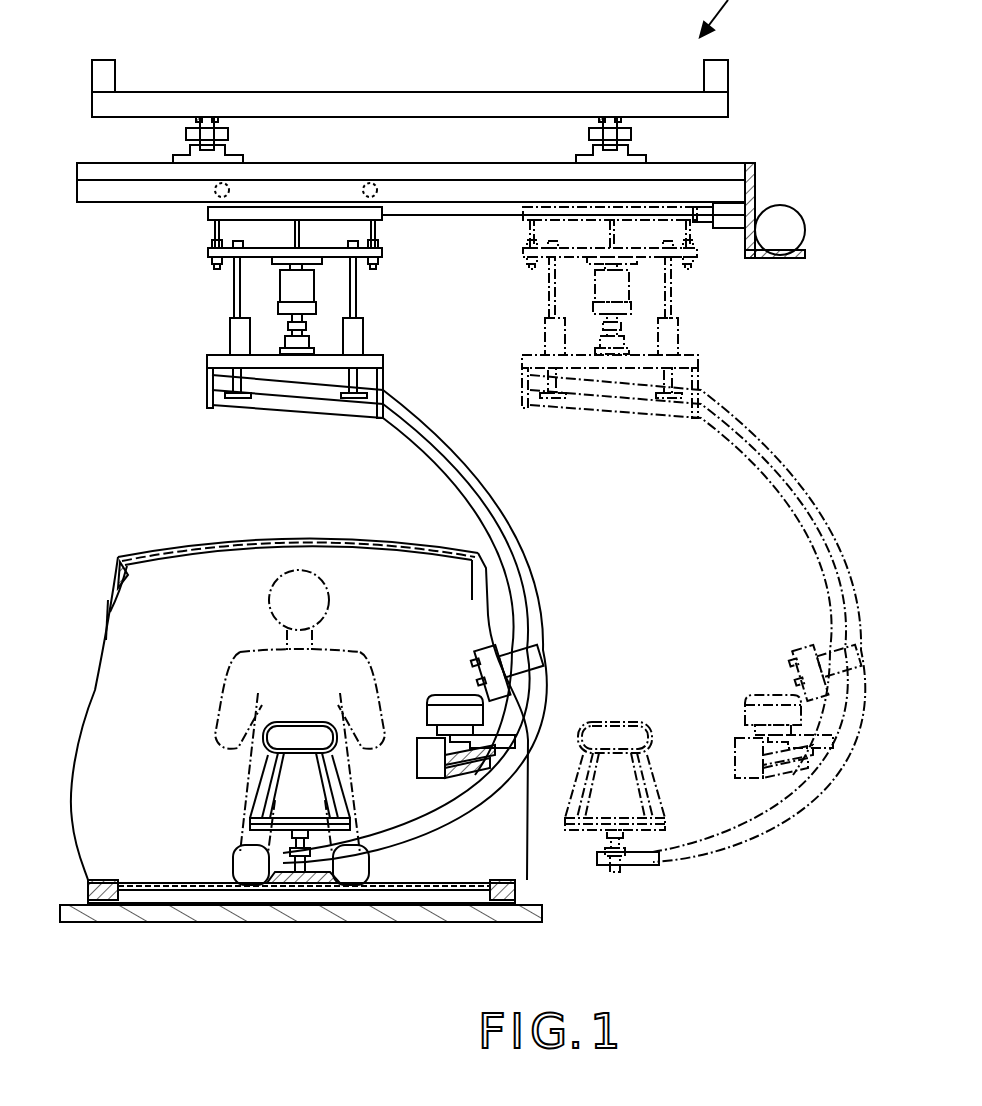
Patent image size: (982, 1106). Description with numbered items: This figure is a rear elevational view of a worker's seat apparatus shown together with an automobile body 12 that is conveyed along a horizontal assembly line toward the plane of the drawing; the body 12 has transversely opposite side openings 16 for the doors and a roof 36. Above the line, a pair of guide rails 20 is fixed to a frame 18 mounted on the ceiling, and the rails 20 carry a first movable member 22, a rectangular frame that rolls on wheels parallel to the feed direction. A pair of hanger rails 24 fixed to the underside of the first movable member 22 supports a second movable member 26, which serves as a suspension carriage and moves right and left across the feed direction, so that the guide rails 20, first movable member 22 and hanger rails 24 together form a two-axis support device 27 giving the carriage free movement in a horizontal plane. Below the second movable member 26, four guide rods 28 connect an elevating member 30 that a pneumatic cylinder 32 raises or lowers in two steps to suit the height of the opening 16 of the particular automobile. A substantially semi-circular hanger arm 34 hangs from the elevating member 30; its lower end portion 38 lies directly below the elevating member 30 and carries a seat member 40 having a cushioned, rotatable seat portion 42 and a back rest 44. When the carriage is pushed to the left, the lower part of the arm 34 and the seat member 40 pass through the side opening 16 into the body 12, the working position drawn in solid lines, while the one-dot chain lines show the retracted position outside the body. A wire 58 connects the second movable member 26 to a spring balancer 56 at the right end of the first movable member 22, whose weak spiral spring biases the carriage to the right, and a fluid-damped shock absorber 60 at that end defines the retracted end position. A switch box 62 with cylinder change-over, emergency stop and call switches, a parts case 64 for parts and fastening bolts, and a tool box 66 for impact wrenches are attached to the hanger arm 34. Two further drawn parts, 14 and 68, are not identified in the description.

The automobile body 12 is at (113, 540).
The base plate 14 is at (385, 915).
The side openings 16 is at (110, 612).
The frame 18 is at (380, 100).
The guide rails 20 is at (210, 120).
The first movable member 22 is at (468, 172).
The hanger rails 24 is at (108, 190).
The second movable member 26 is at (318, 216).
The two-axis support device 27 is at (176, 226).
The guide rods 28 is at (234, 300).
The elevating member 30 is at (370, 362).
The pneumatic cylinder 32 is at (298, 280).
The hanger arm 34 is at (532, 585).
The roof 36 is at (310, 533).
The lower end portion 38 is at (290, 862).
The seat member 40 is at (250, 773).
The seat portion 42 is at (320, 805).
The back rest 44 is at (300, 730).
The spring balancer 56 is at (780, 228).
The wire 58 is at (488, 216).
The shock absorber 60 is at (728, 229).
The switch box 62 is at (488, 650).
The parts case 64 is at (445, 705).
The tool box 66 is at (430, 745).
The floor panel 68 is at (470, 882).